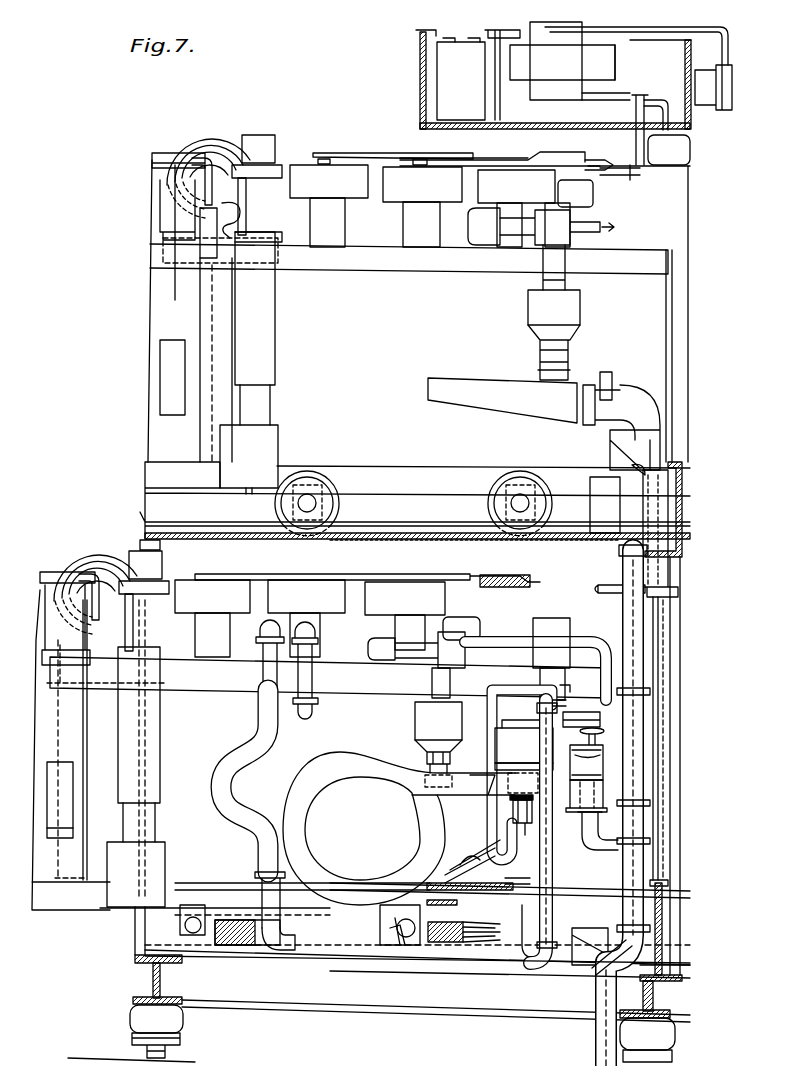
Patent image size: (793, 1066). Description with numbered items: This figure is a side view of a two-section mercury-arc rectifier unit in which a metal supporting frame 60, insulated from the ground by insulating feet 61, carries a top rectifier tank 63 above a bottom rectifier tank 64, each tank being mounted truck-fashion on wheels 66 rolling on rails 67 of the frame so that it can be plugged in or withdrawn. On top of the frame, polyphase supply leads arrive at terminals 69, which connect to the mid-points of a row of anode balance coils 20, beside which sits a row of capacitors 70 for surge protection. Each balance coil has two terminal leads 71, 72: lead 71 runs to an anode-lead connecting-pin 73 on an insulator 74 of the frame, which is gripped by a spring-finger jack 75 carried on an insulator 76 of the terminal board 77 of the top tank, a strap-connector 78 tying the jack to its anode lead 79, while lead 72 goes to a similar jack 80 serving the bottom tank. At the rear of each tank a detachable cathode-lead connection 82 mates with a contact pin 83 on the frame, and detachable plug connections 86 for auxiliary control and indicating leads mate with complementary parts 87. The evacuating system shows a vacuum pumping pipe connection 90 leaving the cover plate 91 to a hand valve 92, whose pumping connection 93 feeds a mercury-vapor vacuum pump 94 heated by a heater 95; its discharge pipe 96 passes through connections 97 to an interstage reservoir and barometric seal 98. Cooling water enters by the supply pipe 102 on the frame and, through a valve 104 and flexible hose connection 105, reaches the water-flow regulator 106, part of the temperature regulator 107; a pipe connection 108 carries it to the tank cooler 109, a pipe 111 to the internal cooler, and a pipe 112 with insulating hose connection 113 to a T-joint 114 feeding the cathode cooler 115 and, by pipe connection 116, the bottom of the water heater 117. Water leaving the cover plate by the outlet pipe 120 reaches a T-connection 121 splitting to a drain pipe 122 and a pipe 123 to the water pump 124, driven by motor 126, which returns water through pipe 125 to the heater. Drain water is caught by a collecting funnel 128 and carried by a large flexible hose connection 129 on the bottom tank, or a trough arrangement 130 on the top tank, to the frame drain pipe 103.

The anode balance coil 20 is at (530, 24).
The supporting frame 60 is at (690, 362).
The insulating feet 61 is at (130, 1018).
The top rectifier tank 63 is at (670, 302).
The bottom rectifier tank 64 is at (566, 670).
The wheels 66 is at (275, 510).
The rails 67 is at (146, 518).
The terminals 69 is at (734, 80).
The capacitors 70 is at (420, 72).
The terminal lead 71 is at (640, 96).
The terminal lead 72 is at (666, 98).
The anode-lead connecting-pin 73 is at (632, 176).
The insulator 74 is at (691, 149).
The spring-finger jack 75 is at (600, 163).
The insulator 76 is at (595, 198).
The terminal board 77 is at (600, 241).
The strap-connector 78 is at (540, 160).
The anode lead 79 is at (320, 153).
The jack 80 is at (680, 600).
The cathode-lead connection 82 is at (480, 948).
The contact pin 83 is at (578, 948).
The detachable plug connections 86 is at (600, 470).
The complementary parts 87 is at (682, 488).
The vacuum pumping pipe connection 90 is at (160, 222).
The cover plate 91 is at (668, 250).
The hand valve 92 is at (178, 150).
The pumping connection 93 is at (222, 167).
The mercury-vapor vacuum pump 94 is at (276, 303).
The heater 95 is at (280, 434).
The discharge pipe 96 is at (243, 226).
The connections 97 is at (208, 156).
The interstage reservoir and barometric seal 98 is at (200, 345).
The supply pipe 102 is at (655, 873).
The drain pipe 103 is at (664, 903).
The valve 104 is at (605, 850).
The flexible hose connection 105 is at (596, 822).
The water-flow regulator 106 is at (604, 731).
The temperature regulator 107 is at (600, 716).
The pipe connection 108 is at (558, 893).
The tank cooler 109 is at (510, 885).
The pipe 111 is at (313, 656).
The pipe 112 is at (262, 638).
The insulating hose connection 113 is at (258, 705).
The T-joint 114 is at (252, 880).
The cathode cooler 115 is at (305, 952).
The pipe connection 116 is at (370, 962).
The water heater 117 is at (566, 687).
The outlet pipe 120 is at (405, 625).
The T-connection 121 is at (466, 628).
The drain pipe 122 is at (432, 680).
The pipe 123 is at (525, 632).
The water pump 124 is at (513, 817).
The pipe 125 is at (492, 686).
The motor 126 is at (533, 757).
The collecting funnel 128 is at (415, 723).
The large flexible hose connection 129 is at (362, 780).
The trough arrangement 130 is at (492, 417).